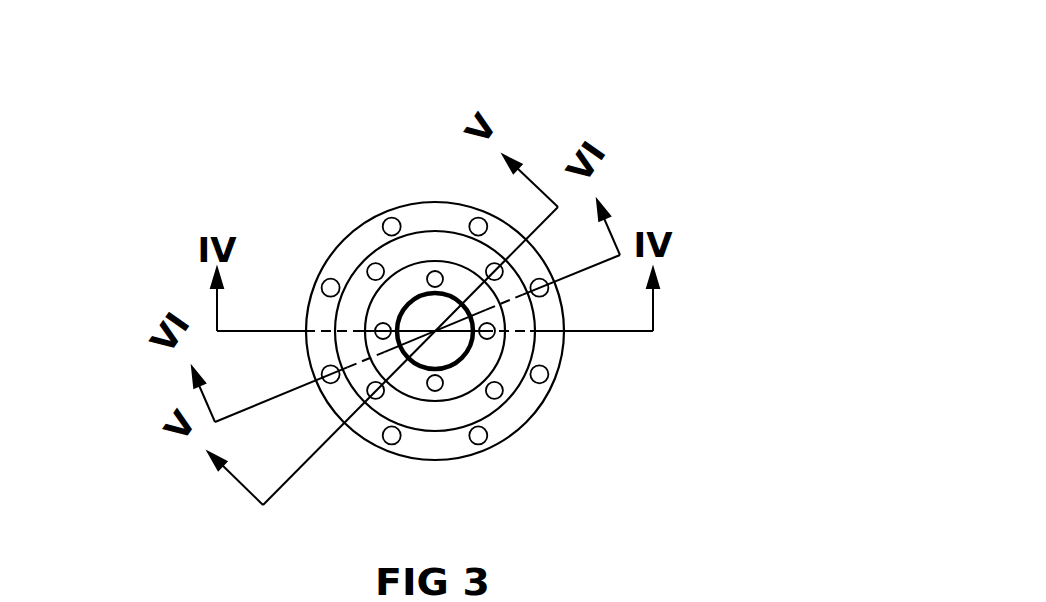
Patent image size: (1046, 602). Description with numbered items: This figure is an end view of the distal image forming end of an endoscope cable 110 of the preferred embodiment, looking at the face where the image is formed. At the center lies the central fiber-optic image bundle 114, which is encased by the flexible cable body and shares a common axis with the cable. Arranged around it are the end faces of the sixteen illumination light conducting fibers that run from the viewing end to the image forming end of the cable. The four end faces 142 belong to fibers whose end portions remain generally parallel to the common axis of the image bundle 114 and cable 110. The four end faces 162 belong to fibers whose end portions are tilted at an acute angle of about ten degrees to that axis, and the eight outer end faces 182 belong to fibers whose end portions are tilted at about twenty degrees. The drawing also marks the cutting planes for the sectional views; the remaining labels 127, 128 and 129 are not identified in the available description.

The endoscope cable 110 is at (686, 85).
The central fiber-optic image bundle 114 is at (461, 414).
The first plate 127 is at (317, 327).
The second plate 128 is at (323, 327).
The third plate 129 is at (474, 386).
The end face 142 is at (520, 321).
The end face 162 is at (436, 292).
The end face 182 is at (415, 303).